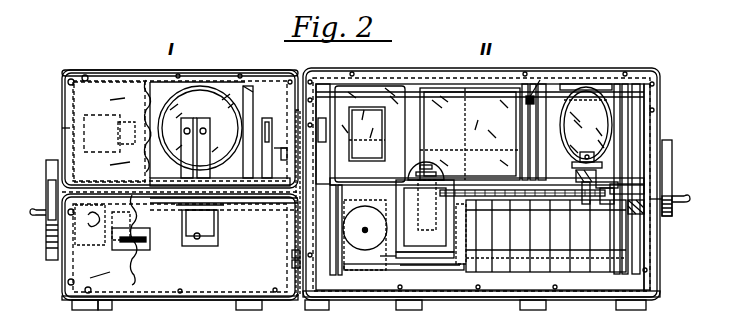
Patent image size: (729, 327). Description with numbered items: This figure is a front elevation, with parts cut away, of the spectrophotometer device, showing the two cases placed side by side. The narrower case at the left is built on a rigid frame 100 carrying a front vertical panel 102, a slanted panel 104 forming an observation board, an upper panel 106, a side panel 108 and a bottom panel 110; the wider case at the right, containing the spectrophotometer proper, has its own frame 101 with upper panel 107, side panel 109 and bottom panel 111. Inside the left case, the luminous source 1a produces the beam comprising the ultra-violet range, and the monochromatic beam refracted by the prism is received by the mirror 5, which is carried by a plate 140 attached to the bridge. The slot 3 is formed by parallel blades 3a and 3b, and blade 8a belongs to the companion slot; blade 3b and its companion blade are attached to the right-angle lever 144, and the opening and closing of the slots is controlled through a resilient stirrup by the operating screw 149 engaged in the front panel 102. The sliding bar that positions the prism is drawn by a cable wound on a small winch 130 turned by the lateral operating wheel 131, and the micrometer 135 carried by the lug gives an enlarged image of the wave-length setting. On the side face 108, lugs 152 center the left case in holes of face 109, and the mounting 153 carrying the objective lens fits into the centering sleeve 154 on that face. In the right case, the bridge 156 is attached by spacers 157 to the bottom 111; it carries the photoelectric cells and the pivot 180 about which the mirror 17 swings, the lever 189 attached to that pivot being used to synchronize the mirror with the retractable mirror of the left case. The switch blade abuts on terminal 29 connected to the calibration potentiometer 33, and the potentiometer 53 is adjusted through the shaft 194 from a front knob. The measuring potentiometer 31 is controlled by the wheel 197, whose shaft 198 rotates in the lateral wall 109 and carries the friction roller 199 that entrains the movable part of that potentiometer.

The luminous source 1a is at (96, 118).
The adjustable slot 3 is at (198, 118).
The blade 3a is at (186, 142).
The blade 3b is at (211, 147).
The mirror 5 is at (164, 131).
The blade 8a is at (266, 168).
The mirror 17 is at (584, 90).
The terminal 29 is at (412, 184).
The measuring potentiometer 31 is at (522, 252).
The calibration potentiometer 33 is at (396, 262).
The potentiometer 53 is at (340, 212).
The rigid frame 100 is at (260, 72).
The rigid frame 101 is at (352, 72).
The front vertical panel 102 is at (66, 269).
The slanted panel 104 is at (66, 104).
The upper panel 106 is at (196, 72).
The upper panel 107 is at (454, 70).
The side panel 108 is at (62, 128).
The side panel 109 is at (292, 266).
The bottom panel 110 is at (120, 302).
The bottom panel 111 is at (432, 298).
The small winch 130 is at (98, 222).
The lateral operating wheel 131 is at (50, 190).
The micrometer 135 is at (136, 250).
The plate 140 is at (251, 100).
The right-angle lever 144 is at (238, 207).
The operating screw 149 is at (195, 240).
The lugs 152 is at (292, 254).
The mounting 153 is at (275, 118).
The centering sleeve 154 is at (323, 120).
The bridge 156 is at (478, 180).
The spacers 157 is at (650, 248).
The pivot 180 is at (584, 178).
The lever 189 is at (596, 145).
The shaft 194 is at (376, 226).
The wheel 197 is at (684, 140).
The shaft 198 is at (685, 199).
The friction roller 199 is at (604, 192).